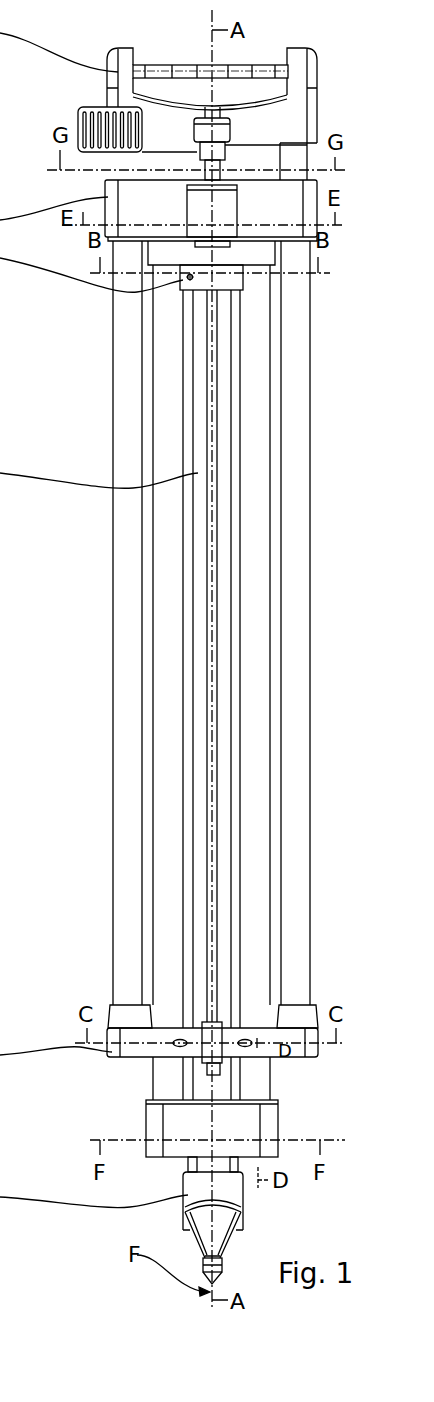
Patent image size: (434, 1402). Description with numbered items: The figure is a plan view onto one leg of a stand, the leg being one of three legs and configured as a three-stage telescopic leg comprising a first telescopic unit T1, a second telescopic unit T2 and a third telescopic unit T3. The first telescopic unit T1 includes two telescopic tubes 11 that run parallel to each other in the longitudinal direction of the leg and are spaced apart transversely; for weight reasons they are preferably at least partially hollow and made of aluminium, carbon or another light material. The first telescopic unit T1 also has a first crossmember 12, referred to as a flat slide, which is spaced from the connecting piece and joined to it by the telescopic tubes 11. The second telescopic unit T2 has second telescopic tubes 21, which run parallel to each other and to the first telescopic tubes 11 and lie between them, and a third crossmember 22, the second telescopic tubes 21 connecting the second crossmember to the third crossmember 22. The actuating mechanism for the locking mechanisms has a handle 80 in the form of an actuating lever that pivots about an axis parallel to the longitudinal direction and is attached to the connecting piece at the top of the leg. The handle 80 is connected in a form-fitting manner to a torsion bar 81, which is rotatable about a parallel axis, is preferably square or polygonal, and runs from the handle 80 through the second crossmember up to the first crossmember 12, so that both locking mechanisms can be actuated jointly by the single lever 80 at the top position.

The telescopic tubes 11 is at (300, 158).
The first crossmember 12 is at (143, 67).
The second telescopic tubes 21 is at (160, 371).
The third crossmember 22 is at (270, 1125).
The handle 80 is at (98, 128).
The torsion bar 81 is at (213, 480).
The first telescopic unit T1 is at (108, 600).
The second telescopic unit T2 is at (270, 517).
The third telescopic unit T3 is at (240, 960).